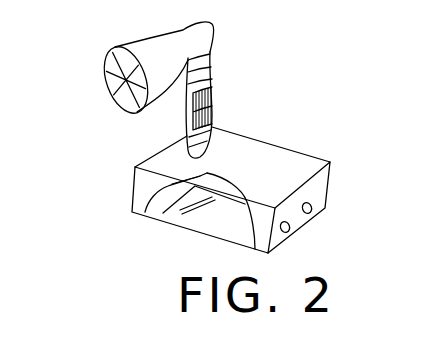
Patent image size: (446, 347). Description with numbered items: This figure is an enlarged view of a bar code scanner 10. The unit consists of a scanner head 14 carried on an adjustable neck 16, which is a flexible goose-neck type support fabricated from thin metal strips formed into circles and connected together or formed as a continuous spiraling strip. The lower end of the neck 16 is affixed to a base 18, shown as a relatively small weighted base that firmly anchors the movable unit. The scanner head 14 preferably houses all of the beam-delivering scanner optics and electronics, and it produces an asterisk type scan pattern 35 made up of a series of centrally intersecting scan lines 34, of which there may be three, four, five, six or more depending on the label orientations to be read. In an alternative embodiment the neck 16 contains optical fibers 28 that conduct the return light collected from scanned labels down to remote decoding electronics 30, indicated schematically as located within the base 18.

The scanner 10 is at (303, 68).
The scanner head 14 is at (155, 36).
The adjustable neck 16 is at (213, 80).
The base 18 is at (290, 165).
The optical fibers 28 is at (212, 106).
The remote decoding electronics 30 is at (197, 212).
The scan lines 34 is at (107, 73).
The asterisk scan pattern 35 is at (96, 88).